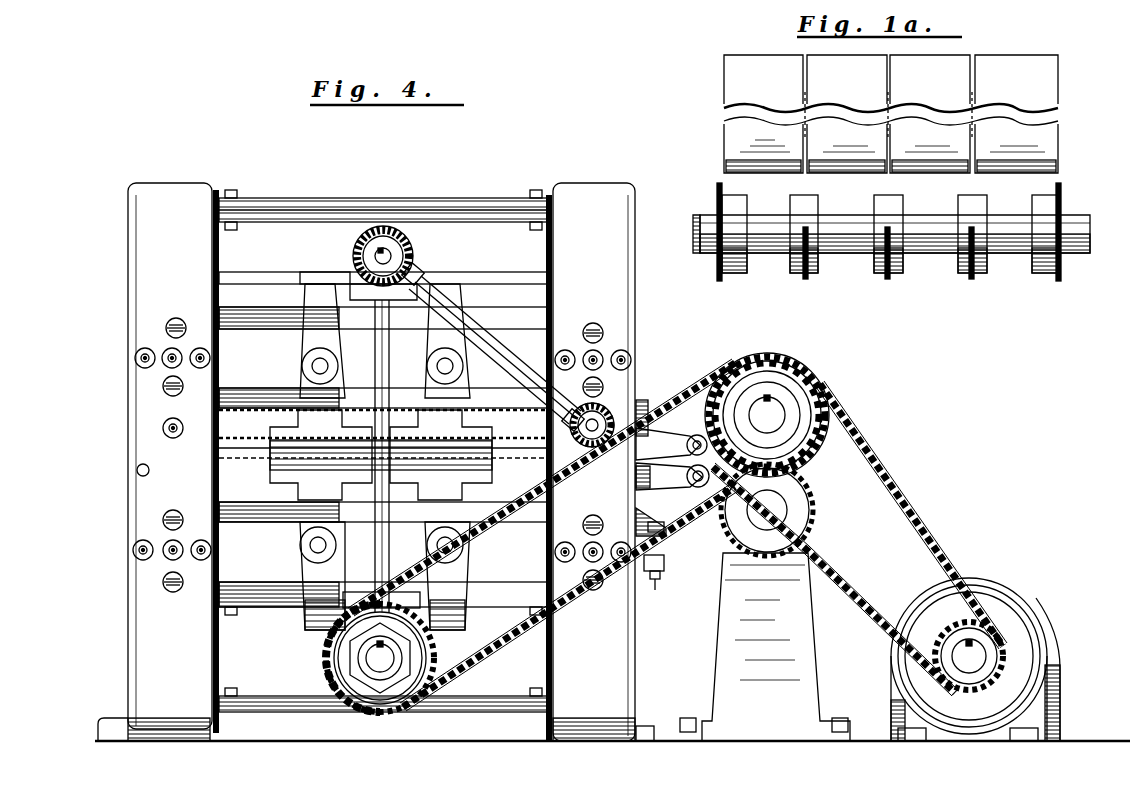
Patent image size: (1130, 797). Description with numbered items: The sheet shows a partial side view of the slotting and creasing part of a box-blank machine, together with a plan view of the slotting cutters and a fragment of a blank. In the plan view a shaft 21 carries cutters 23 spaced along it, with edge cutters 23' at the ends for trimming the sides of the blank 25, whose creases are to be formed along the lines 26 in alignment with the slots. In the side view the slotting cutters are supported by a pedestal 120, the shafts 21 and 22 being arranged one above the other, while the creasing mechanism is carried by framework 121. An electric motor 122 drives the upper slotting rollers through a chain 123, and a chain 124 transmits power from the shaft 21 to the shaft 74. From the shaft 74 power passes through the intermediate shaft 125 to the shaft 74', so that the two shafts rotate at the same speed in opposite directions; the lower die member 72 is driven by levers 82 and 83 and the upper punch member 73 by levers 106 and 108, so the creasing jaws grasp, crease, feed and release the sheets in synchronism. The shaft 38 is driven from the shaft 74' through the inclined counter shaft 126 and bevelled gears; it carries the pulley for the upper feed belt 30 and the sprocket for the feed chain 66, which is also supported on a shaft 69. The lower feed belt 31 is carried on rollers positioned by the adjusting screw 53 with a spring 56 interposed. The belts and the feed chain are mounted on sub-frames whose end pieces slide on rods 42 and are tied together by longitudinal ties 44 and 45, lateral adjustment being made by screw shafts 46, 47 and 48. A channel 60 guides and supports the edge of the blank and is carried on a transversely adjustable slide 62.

In FIG. 4, the framework 121 is at (142, 210).
In FIG. 4, the rod 42 is at (166, 322).
In FIG. 4, the screw shaft 47 is at (140, 352).
In FIG. 4, the screw shaft 46 is at (164, 360).
In FIG. 4, the screw shaft 48 is at (194, 364).
In FIG. 4, the shaft 69 is at (165, 432).
In FIG. 4, the slide 62 is at (137, 473).
In FIG. 4, the shaft 74' is at (380, 226).
In FIG. 4, the intermediate shaft 125 is at (358, 340).
In FIG. 4, the lever 108 is at (455, 290).
In FIG. 4, the longitudinal tie 45 is at (514, 322).
In FIG. 4, the inclined counter shaft 126 is at (519, 356).
In FIG. 4, the lever 106 is at (306, 338).
In FIG. 4, the upper punch member 73 is at (380, 425).
In FIG. 4, the longitudinal tie 44 is at (502, 400).
In FIG. 4, the shaft 38 is at (601, 417).
In FIG. 4, the feed belt 30 is at (672, 428).
In FIG. 4, the feed belt 31 is at (688, 500).
In FIG. 4, the feed chain 66 is at (248, 440).
In FIG. 4, the channel 60 is at (520, 452).
In FIG. 4, the lever 82 is at (306, 570).
In FIG. 4, the lower die member 72 is at (467, 478).
In FIG. 4, the lever 83 is at (460, 606).
In FIG. 4, the shaft 74 is at (349, 658).
In FIG. 4, the chain 124 is at (556, 596).
In FIG. 4, the spring 56 is at (664, 540).
In FIG. 4, the adjusting bolt or screw 53 is at (656, 592).
In FIG. 4, the shaft 21 is at (795, 445).
In FIG. 1A, the shaft 21 is at (937, 248).
In FIG. 4, the shaft 22 is at (790, 513).
In FIG. 4, the chain 123 is at (890, 464).
In FIG. 4, the electric motor 122 is at (1000, 612).
In FIG. 4, the pedestal 120 is at (798, 672).
In FIG. 1A, the blank 25 is at (736, 82).
In FIG. 1A, the crease line 26 is at (892, 103).
In FIG. 1A, the cutter 23 is at (905, 256).
In FIG. 1A, the edge cutter 23' is at (912, 251).